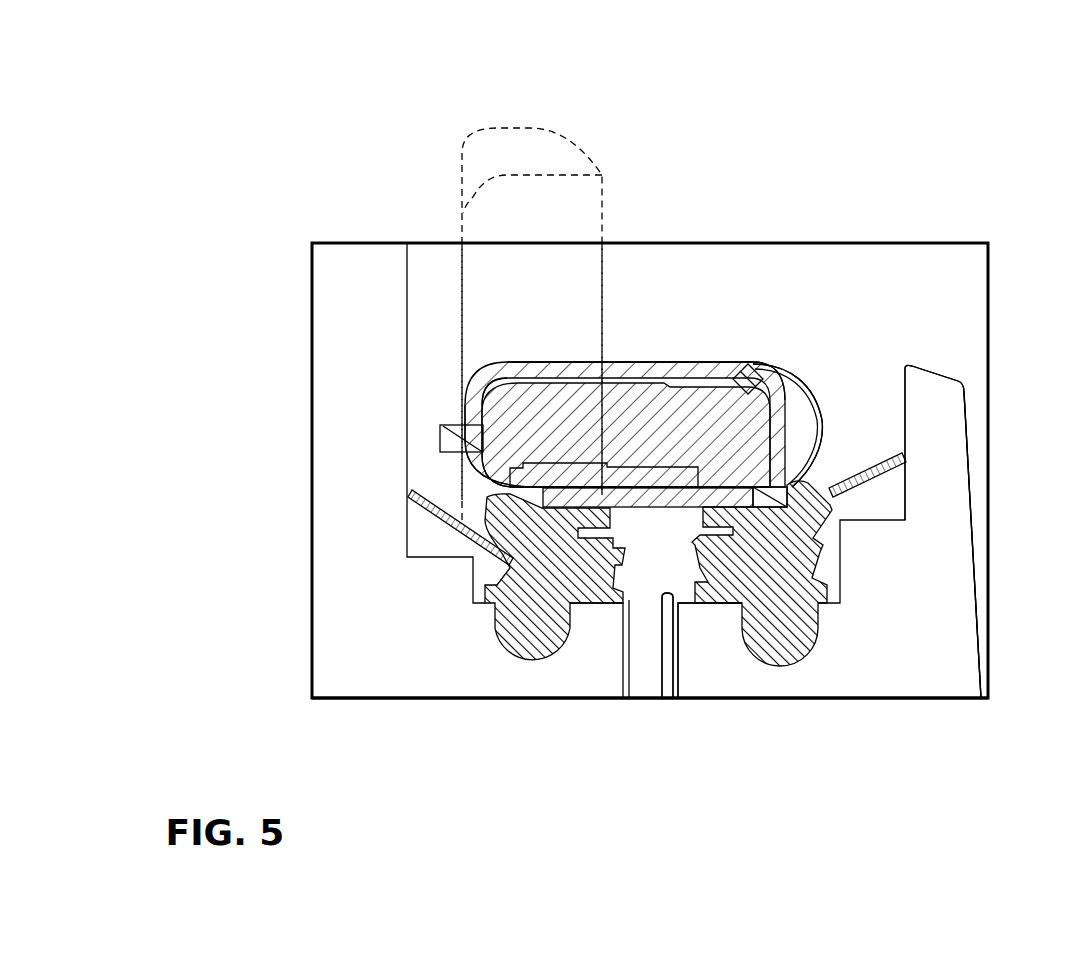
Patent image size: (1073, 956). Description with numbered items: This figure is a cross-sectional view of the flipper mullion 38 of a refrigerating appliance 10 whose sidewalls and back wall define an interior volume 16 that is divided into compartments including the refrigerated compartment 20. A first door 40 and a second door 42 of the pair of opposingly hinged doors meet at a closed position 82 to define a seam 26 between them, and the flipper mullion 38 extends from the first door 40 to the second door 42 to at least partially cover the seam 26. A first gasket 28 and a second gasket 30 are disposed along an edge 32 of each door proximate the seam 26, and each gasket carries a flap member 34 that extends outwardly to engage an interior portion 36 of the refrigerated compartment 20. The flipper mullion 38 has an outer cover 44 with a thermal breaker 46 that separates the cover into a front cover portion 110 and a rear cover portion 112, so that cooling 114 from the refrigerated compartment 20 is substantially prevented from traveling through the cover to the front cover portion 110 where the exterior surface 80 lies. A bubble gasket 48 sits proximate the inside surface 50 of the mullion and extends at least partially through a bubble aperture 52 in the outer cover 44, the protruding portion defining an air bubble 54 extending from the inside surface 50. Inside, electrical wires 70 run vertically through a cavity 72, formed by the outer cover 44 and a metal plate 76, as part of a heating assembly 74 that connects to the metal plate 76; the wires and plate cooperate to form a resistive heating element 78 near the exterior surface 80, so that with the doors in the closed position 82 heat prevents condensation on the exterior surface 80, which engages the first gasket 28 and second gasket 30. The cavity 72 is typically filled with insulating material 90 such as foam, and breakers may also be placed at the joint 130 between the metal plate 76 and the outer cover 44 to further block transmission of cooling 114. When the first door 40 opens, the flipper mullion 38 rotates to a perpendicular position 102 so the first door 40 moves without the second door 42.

The refrigerating appliance 10 is at (427, 122).
The interior volume 16 is at (771, 205).
The refrigerated compartment 20 is at (942, 228).
The seam 26 is at (641, 713).
The first gasket 28 is at (823, 603).
The second gasket 30 is at (483, 598).
The edge 32 is at (668, 592).
The flap member 34 is at (906, 493).
The interior portion 36 is at (899, 416).
The flipper mullion 38 is at (628, 330).
The first door 40 is at (928, 673).
The second door 42 is at (353, 667).
The outer cover 44 is at (503, 357).
The thermal breaker 46 is at (440, 438).
The bubble gasket 48 is at (832, 388).
The inside surface 50 is at (720, 363).
The bubble aperture 52 is at (757, 368).
The air bubble 54 is at (522, 125).
The electrical wires 70 is at (622, 483).
The cavity 72 is at (495, 401).
The heating assembly 74 is at (630, 508).
The metal plate 76 is at (640, 522).
The resistive heating element 78 is at (680, 487).
The exterior surface 80 is at (653, 520).
The closed position 82 is at (902, 720).
The insulating material 90 is at (482, 468).
The perpendicular position 102 is at (457, 212).
The front cover portion 110 is at (487, 487).
The rear cover portion 112 is at (490, 362).
The cooling 114 is at (835, 306).
The joint 130 is at (462, 415).